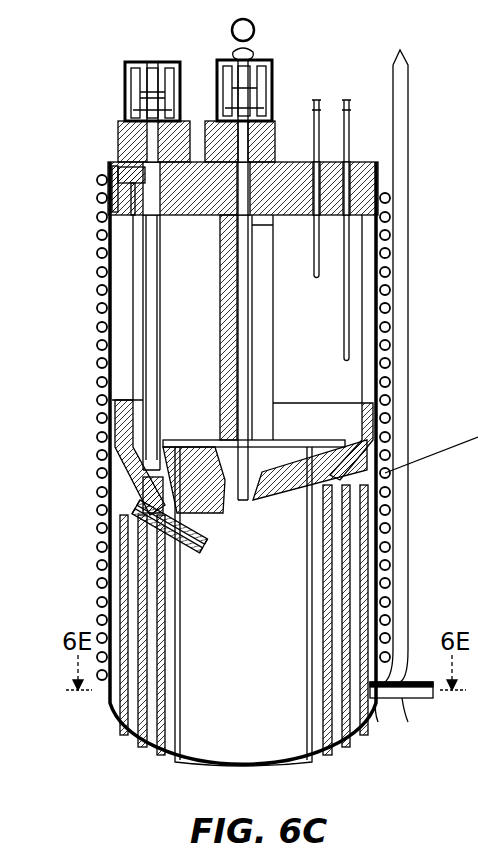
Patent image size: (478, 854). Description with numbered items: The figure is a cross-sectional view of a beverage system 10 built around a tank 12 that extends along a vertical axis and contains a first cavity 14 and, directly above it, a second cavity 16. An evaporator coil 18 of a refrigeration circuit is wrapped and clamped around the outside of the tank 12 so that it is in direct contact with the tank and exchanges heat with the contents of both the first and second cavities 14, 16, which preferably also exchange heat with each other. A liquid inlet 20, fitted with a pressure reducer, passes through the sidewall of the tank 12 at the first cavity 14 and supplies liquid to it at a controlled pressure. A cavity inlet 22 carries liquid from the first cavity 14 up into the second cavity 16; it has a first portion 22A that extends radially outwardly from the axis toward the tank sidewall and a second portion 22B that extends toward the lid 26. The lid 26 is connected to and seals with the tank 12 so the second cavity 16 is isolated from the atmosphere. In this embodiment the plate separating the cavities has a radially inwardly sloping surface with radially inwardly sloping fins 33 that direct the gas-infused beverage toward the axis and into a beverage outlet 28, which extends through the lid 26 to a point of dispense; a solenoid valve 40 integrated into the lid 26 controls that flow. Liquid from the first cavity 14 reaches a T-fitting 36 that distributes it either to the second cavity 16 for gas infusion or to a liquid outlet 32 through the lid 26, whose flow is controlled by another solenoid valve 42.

The system 10 is at (432, 108).
The tank 12 is at (110, 715).
The first cavity 14 is at (265, 600).
The second cavity 16 is at (345, 388).
The evaporator coil 18 is at (110, 440).
The liquid inlet 20 is at (396, 706).
The cavity inlet 22 is at (148, 328).
The first portion 22A is at (140, 523).
The second portion 22B is at (148, 240).
The lid 26 is at (378, 182).
The beverage outlet 28 is at (247, 358).
The liquid outlet 32 is at (148, 137).
The radially inwardly sloping fins 33 is at (372, 432).
The T-fitting 36 is at (118, 196).
The solenoid valve 40 is at (262, 56).
The solenoid valve 42 is at (168, 62).